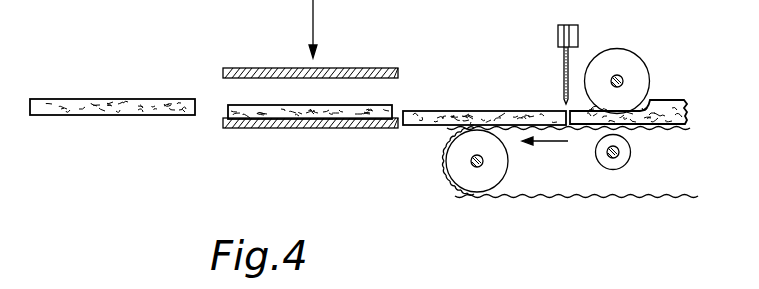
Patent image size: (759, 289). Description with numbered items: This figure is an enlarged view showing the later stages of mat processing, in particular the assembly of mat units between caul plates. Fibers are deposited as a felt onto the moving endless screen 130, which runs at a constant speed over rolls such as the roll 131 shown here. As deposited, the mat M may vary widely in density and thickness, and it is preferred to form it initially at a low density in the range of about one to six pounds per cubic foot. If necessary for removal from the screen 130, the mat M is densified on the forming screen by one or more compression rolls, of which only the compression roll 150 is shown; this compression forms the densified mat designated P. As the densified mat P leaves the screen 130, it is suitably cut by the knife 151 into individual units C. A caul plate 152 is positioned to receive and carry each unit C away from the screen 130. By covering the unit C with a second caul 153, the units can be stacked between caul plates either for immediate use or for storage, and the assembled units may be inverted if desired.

The moving endless screen 130 is at (622, 196).
The roll 131 is at (455, 162).
The compression roll 150 is at (641, 58).
The knife 151 is at (562, 78).
The caul plate 152 is at (310, 141).
The second caul 153 is at (310, 52).
The mat unit C is at (106, 97).
The mat M is at (667, 96).
The densified mat P is at (581, 108).